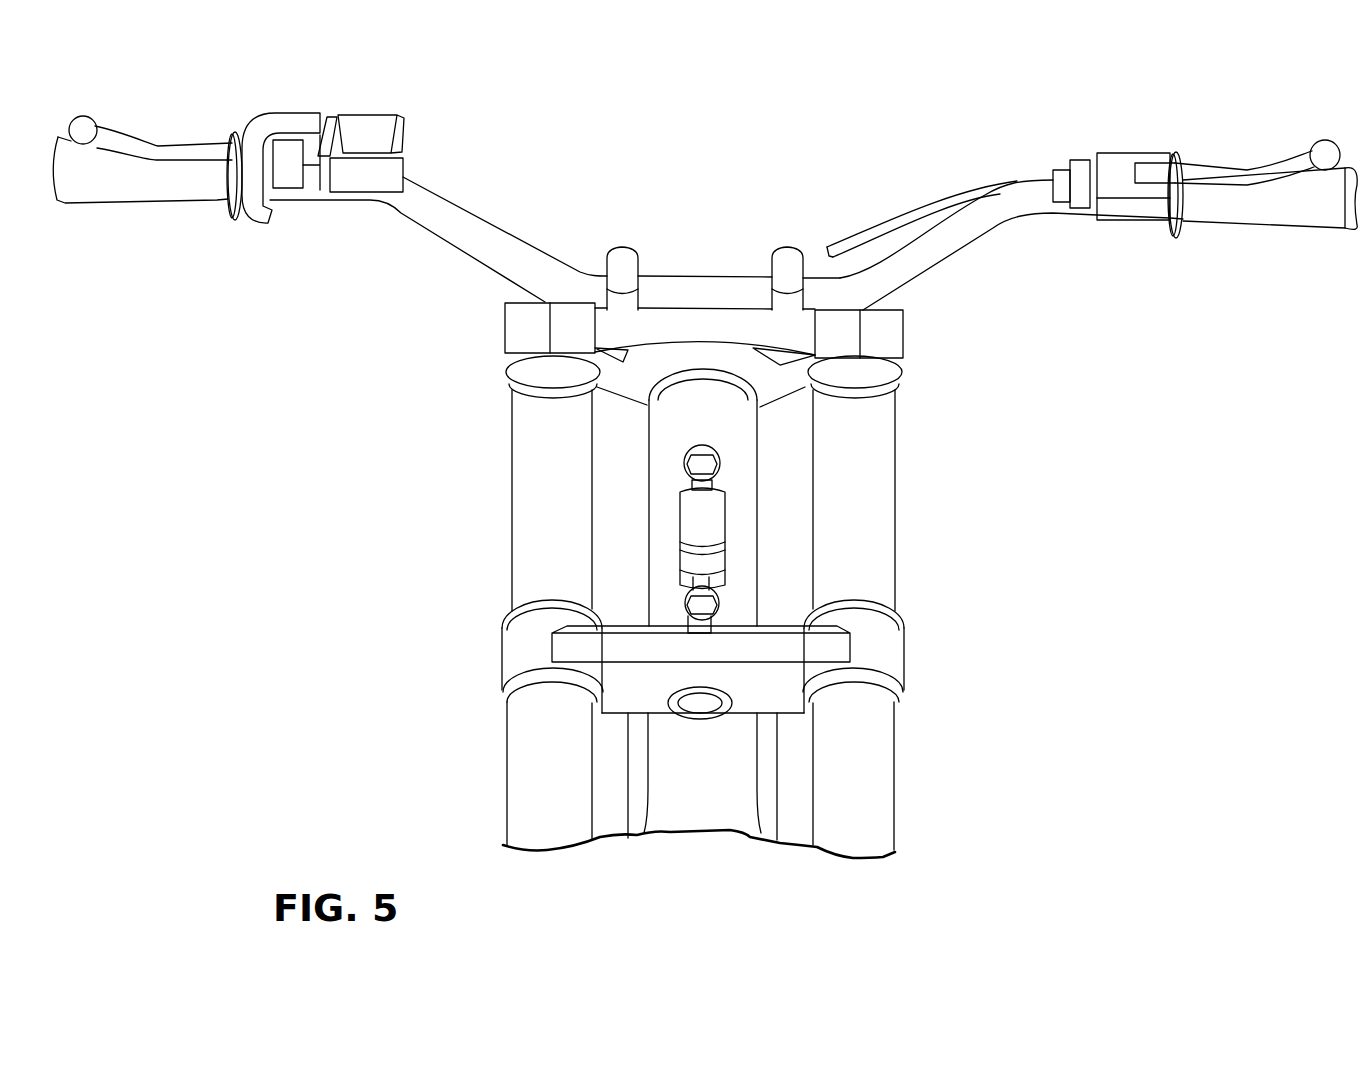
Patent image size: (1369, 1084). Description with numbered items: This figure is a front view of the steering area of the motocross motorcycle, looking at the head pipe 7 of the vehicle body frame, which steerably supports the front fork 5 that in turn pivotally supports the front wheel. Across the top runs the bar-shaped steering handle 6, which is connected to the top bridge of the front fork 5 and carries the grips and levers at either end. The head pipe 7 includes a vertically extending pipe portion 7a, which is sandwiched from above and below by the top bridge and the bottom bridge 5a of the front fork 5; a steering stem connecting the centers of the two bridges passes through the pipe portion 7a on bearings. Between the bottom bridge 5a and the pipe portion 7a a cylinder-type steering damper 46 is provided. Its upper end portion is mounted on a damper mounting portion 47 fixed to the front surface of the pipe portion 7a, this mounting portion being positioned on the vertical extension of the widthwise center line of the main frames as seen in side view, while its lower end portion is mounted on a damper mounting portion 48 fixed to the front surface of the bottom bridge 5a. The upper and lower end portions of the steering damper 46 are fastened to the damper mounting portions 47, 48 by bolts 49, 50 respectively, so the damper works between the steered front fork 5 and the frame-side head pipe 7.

The front fork 5 is at (897, 585).
The bottom bridge 5a is at (615, 687).
The steering handle 6 is at (945, 248).
The head pipe 7 is at (748, 581).
The pipe portion 7a is at (663, 415).
The steering damper 46 is at (689, 510).
The damper mounting portion 47 is at (707, 482).
The damper mounting portion 48 is at (705, 623).
The bolt 49 is at (703, 451).
The bolt 50 is at (683, 630).